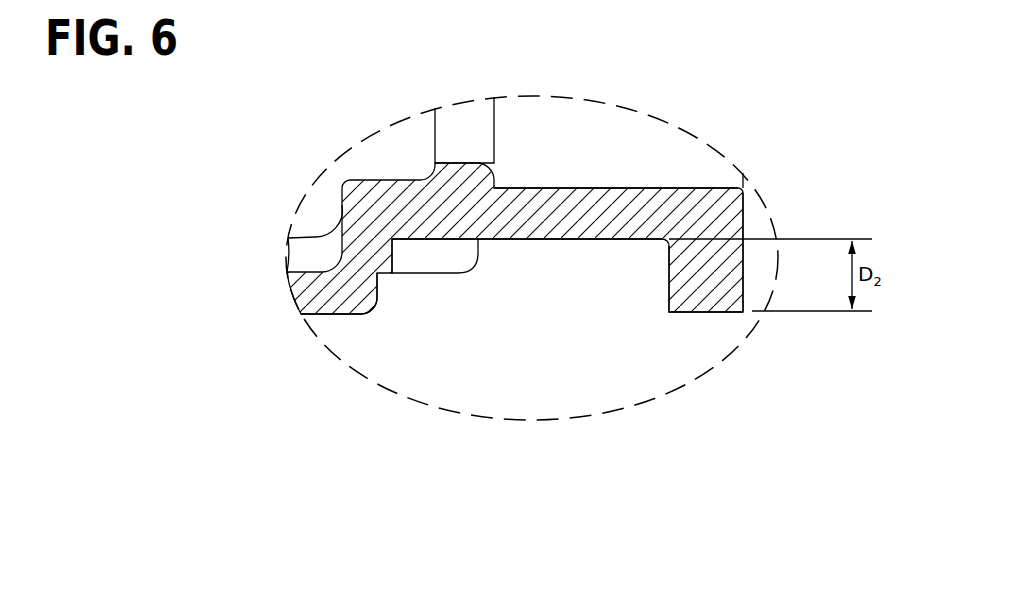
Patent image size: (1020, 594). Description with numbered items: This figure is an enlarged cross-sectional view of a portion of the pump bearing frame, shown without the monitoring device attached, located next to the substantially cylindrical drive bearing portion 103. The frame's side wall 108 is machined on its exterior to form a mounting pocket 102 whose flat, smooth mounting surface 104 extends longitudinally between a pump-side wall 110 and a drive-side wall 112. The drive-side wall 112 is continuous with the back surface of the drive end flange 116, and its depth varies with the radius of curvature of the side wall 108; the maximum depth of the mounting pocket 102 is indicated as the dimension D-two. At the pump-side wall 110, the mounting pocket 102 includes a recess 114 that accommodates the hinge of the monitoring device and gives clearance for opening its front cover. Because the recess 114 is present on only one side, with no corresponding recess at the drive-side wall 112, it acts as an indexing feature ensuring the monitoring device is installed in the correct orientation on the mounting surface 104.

The mounting pocket 102 is at (515, 332).
The drive bearing portion 103 is at (532, 224).
The mounting surface 104 is at (575, 365).
The side wall 108 is at (632, 131).
The pump-side wall 110 is at (435, 346).
The drive-side wall 112 is at (693, 355).
The recess 114 is at (345, 368).
The drive end flange 116 is at (773, 277).